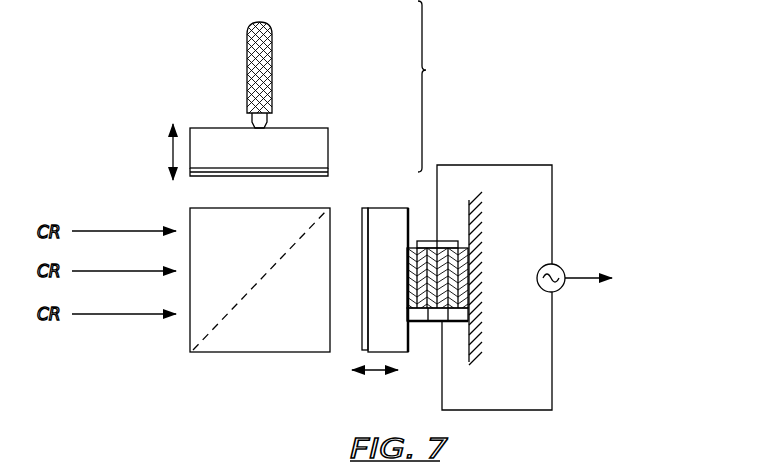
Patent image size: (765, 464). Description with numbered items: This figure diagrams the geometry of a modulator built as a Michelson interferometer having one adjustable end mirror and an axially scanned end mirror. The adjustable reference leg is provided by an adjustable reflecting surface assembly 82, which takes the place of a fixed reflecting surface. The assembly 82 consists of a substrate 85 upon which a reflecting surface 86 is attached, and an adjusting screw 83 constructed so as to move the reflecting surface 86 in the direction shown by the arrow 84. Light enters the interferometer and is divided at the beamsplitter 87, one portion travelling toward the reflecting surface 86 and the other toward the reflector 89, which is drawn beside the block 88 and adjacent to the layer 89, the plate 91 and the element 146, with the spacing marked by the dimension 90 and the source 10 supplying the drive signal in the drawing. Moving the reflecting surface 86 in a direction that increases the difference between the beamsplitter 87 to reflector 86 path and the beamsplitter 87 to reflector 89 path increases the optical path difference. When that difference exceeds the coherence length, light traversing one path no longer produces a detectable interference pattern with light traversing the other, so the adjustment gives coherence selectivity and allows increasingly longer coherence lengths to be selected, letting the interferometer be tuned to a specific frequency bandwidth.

The AC signal source 10 is at (557, 297).
The adjustable reflecting surface assembly 82 is at (435, 86).
The adjusting screw 83 is at (281, 56).
The arrow 84 is at (168, 150).
The substrate 85 is at (331, 135).
The reflecting surface 86 is at (332, 167).
The beamsplitter 87 is at (222, 325).
The sample block 88 is at (290, 333).
The reflector 89 is at (356, 344).
The thickness dimension 90 is at (379, 376).
The plate 91 is at (404, 358).
The transducer crystal 146 is at (413, 240).